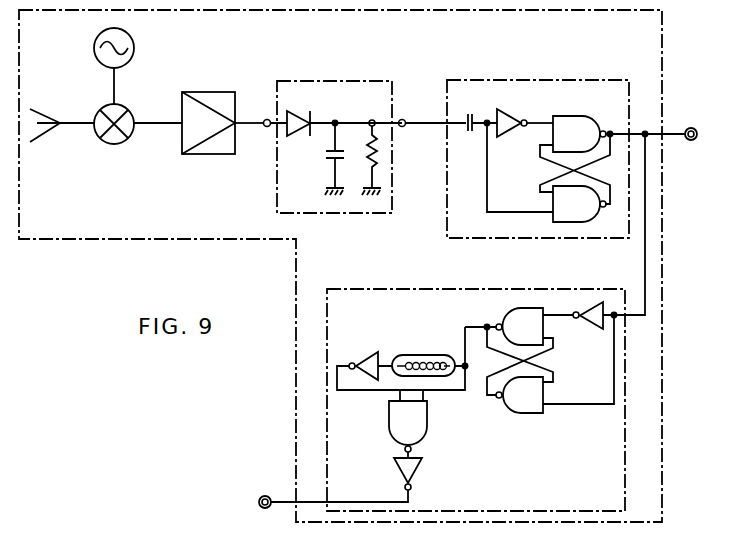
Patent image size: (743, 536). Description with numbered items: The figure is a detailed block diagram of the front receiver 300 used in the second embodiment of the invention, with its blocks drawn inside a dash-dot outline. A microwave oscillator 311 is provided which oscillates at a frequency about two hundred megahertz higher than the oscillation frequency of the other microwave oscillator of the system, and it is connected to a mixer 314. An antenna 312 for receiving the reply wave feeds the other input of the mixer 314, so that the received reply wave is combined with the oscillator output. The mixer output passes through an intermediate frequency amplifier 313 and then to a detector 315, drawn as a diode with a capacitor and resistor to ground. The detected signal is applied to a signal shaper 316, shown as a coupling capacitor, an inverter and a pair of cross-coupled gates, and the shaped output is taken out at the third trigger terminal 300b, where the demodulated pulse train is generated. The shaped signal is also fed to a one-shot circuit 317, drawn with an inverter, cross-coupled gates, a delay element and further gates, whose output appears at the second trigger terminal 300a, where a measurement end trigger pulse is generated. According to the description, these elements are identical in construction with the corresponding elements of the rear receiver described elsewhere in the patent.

The front receiver 300 is at (296, 283).
The second trigger terminal 300a is at (268, 487).
The third trigger terminal 300b is at (686, 124).
The microwave oscillator 311 is at (131, 38).
The antenna 312 is at (58, 118).
The intermediate frequency amplifier 313 is at (230, 91).
The mixer 314 is at (131, 120).
The detector 315 is at (352, 81).
The signal shaper 316 is at (496, 60).
The one-shot circuit 317 is at (625, 368).